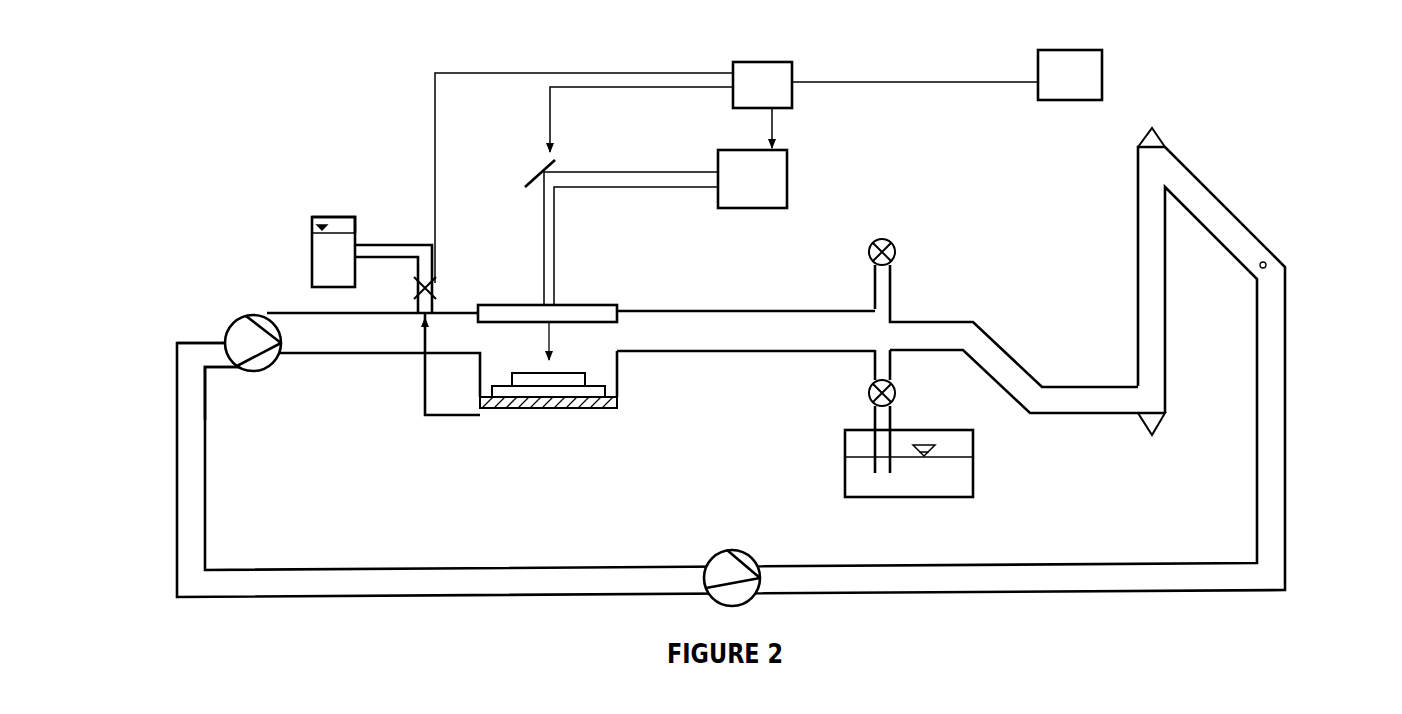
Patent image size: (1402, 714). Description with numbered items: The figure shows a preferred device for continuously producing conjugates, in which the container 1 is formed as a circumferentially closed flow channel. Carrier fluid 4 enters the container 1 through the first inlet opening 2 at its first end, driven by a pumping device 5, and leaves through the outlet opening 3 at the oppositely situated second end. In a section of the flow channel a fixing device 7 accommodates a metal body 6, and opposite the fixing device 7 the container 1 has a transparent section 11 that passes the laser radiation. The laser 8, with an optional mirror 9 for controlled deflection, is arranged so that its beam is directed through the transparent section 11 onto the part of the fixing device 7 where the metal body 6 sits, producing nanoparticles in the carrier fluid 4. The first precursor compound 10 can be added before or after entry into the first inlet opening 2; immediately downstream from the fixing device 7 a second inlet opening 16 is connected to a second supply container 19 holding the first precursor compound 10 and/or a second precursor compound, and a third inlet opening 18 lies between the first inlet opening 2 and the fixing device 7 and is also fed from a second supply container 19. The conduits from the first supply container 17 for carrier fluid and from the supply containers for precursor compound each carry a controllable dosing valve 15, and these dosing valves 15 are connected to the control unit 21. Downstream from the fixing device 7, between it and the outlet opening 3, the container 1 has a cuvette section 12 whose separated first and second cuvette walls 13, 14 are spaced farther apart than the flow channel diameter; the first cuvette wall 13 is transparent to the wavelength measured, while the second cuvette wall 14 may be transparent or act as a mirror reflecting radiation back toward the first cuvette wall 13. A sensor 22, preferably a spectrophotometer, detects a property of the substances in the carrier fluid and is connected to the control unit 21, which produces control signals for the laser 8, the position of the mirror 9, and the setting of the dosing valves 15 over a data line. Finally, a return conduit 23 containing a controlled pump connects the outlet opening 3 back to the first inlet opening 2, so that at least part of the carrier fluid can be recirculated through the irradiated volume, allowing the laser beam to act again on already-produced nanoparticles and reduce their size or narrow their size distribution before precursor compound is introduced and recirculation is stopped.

The container 1 is at (260, 311).
The first inlet opening 2 is at (224, 328).
The outlet opening 3 is at (1357, 265).
The carrier fluid 4 is at (322, 352).
The pumping device 5 is at (262, 377).
The metal body 6 is at (590, 379).
The fixing device 7 is at (557, 398).
The laser 8 is at (665, 255).
The mirror 9 is at (633, 158).
The first precursor compound 10 is at (311, 252).
The transparent section 11 is at (602, 299).
The cuvette section 12 is at (1167, 358).
The first cuvette wall 13 is at (1258, 108).
The second cuvette wall 14 is at (1152, 435).
The dosing valve 15 is at (898, 247).
The second inlet opening 16 is at (884, 348).
The first supply container 17 is at (1090, 467).
The third inlet opening 18 is at (452, 365).
The second supply container 19 is at (410, 197).
The control unit 21 is at (736, 172).
The sensor 22 is at (1070, 75).
The return conduit 23 is at (868, 597).